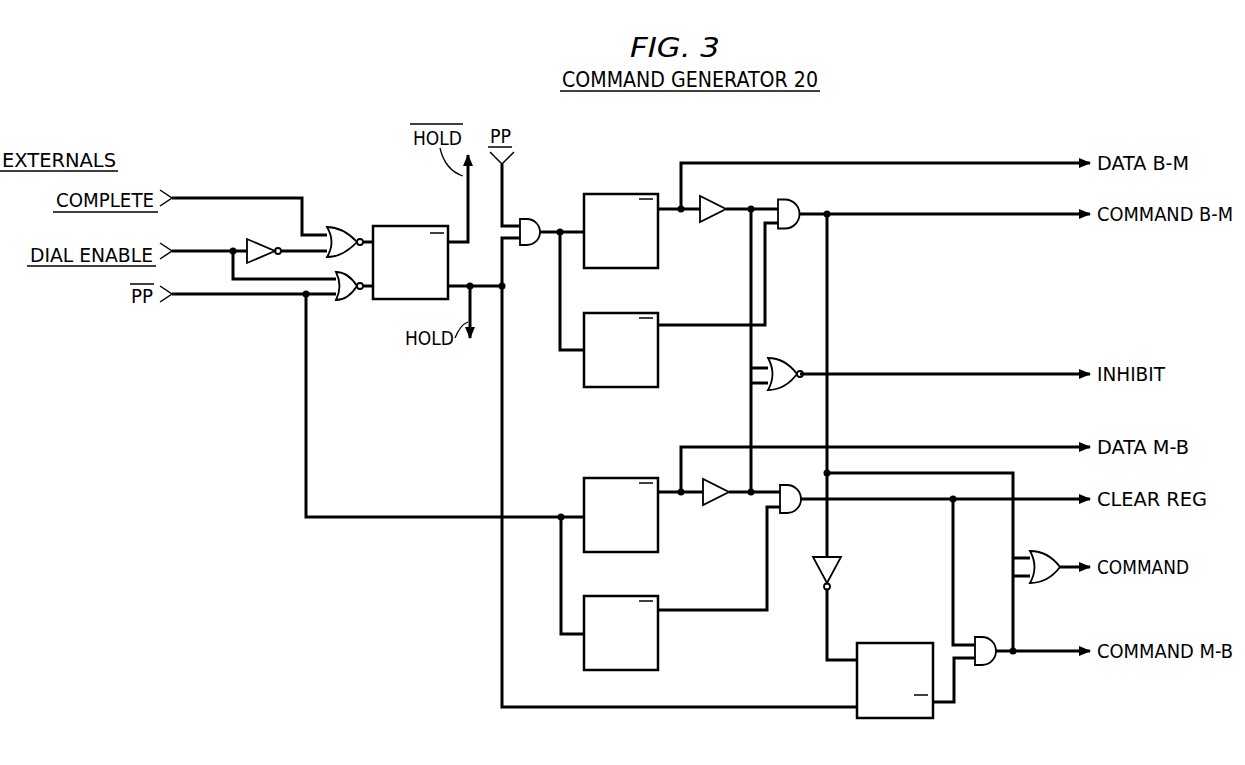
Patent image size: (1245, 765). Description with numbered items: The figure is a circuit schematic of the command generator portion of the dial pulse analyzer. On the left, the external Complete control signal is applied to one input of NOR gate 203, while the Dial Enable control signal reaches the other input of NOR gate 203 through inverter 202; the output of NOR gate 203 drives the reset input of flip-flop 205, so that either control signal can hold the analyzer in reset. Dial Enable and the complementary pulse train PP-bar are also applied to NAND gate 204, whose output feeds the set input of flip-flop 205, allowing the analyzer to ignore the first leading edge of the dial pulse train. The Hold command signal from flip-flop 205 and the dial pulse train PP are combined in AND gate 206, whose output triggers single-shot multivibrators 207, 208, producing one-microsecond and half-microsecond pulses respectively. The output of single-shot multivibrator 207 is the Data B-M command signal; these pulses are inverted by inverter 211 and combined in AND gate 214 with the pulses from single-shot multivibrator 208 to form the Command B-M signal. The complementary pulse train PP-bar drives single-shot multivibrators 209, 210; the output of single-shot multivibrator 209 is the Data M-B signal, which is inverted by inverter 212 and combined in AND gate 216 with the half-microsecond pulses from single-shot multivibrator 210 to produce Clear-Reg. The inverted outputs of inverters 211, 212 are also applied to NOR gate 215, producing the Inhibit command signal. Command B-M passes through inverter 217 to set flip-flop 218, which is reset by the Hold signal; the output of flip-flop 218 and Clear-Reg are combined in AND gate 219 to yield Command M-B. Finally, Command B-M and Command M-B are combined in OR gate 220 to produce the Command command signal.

The inverter 202 is at (265, 232).
The NOR gate 203 is at (344, 228).
The NAND gate 204 is at (346, 299).
The flip-flop 205 is at (400, 233).
The AND gate 206 is at (538, 212).
The single-shot multivibrator 207 is at (618, 204).
The single-shot multivibrator 208 is at (600, 323).
The single-shot multivibrator 209 is at (622, 488).
The single-shot multivibrator 210 is at (618, 604).
The inverter 211 is at (714, 206).
The inverter 212 is at (719, 496).
The AND gate 214 is at (789, 204).
The NOR gate 215 is at (778, 364).
The AND gate 216 is at (800, 472).
The inverter 217 is at (833, 566).
The flip-flop 218 is at (904, 630).
The AND gate 219 is at (996, 624).
The OR gate 220 is at (1040, 557).